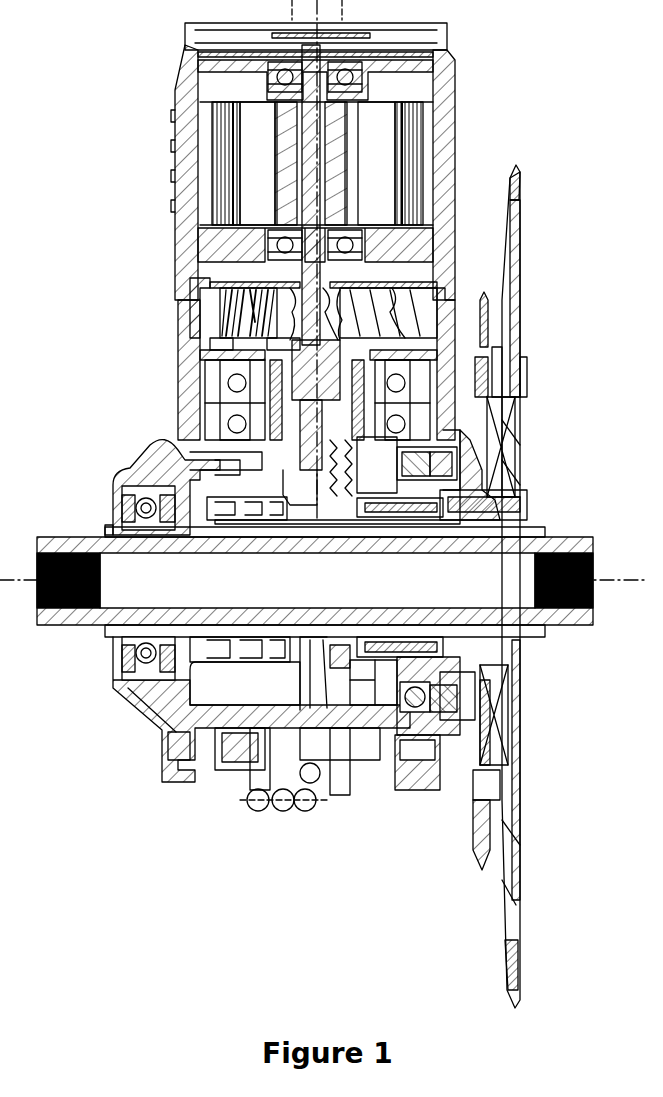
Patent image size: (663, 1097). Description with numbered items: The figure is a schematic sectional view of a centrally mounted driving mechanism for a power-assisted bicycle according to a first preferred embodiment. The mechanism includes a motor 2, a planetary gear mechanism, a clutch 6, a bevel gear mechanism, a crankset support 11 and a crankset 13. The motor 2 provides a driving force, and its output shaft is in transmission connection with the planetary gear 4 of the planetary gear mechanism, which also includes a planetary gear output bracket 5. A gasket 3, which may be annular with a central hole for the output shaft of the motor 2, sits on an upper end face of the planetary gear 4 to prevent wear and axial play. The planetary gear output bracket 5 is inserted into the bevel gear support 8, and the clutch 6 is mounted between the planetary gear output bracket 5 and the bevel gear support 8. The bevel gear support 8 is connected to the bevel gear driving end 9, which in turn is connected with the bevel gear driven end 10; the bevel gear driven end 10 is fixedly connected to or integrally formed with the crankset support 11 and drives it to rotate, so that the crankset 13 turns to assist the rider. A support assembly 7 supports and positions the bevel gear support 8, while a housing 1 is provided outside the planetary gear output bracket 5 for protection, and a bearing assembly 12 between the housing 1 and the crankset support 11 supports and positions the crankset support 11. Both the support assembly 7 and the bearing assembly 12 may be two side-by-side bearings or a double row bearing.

The housing 1 is at (445, 140).
The motor 2 is at (320, 237).
The gasket 3 is at (368, 262).
The planetary gear 4 is at (212, 296).
The planetary gear output bracket 5 is at (392, 338).
The clutch 6 is at (218, 368).
The support assembly 7 is at (226, 418).
The bevel gear support 8 is at (418, 396).
The bevel gear driving end 9 is at (422, 424).
The bevel gear driven end 10 is at (456, 462).
The crankset support 11 is at (490, 488).
The bearing assembly 12 is at (458, 702).
The crankset 13 is at (508, 780).